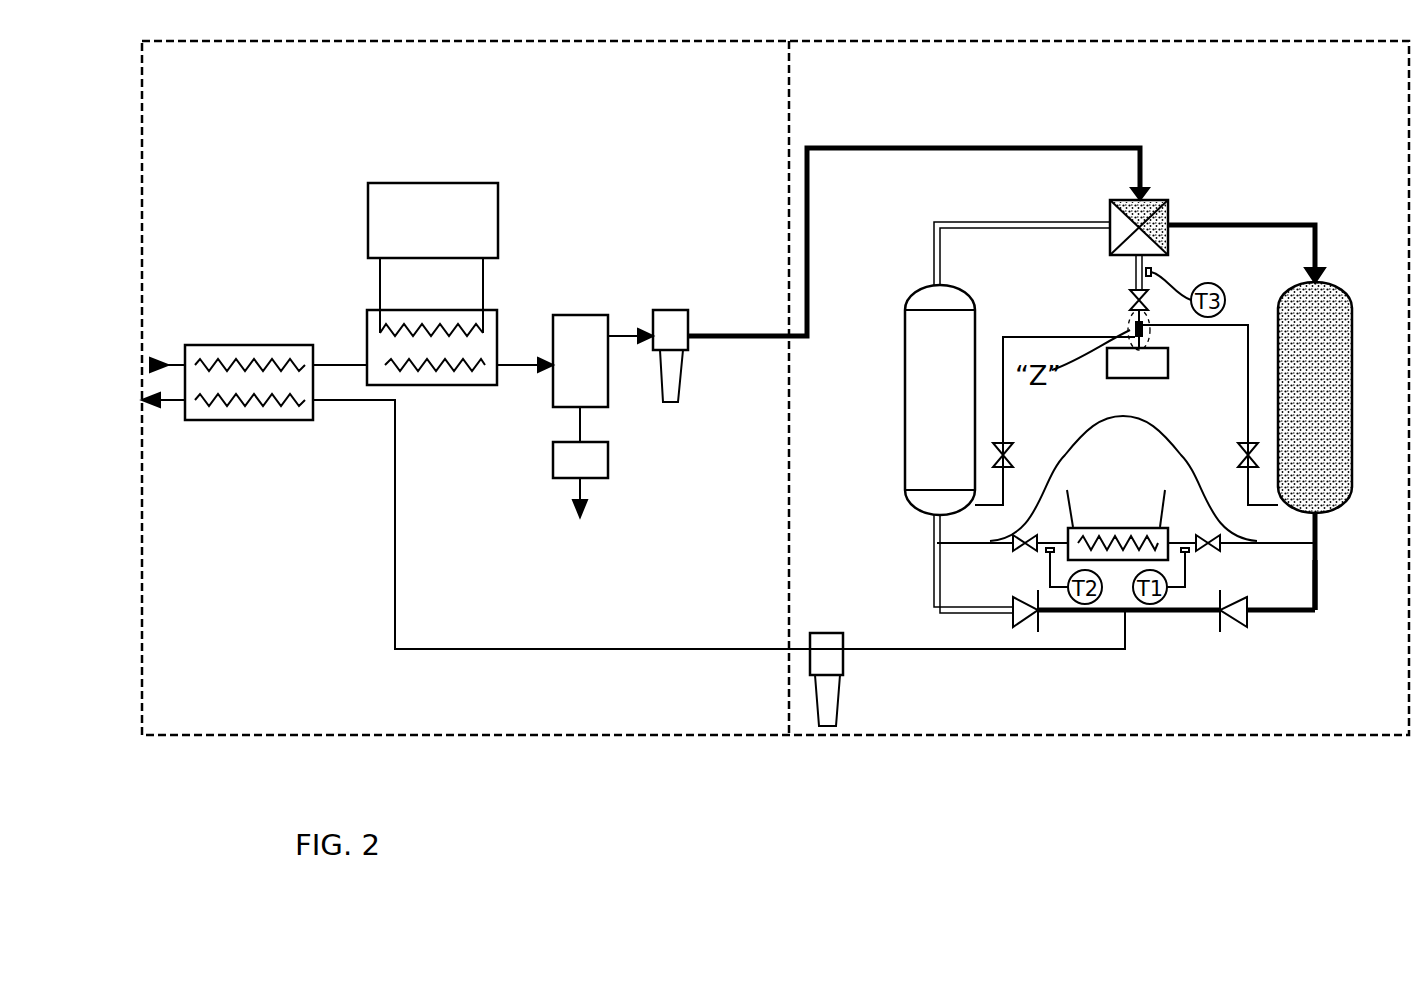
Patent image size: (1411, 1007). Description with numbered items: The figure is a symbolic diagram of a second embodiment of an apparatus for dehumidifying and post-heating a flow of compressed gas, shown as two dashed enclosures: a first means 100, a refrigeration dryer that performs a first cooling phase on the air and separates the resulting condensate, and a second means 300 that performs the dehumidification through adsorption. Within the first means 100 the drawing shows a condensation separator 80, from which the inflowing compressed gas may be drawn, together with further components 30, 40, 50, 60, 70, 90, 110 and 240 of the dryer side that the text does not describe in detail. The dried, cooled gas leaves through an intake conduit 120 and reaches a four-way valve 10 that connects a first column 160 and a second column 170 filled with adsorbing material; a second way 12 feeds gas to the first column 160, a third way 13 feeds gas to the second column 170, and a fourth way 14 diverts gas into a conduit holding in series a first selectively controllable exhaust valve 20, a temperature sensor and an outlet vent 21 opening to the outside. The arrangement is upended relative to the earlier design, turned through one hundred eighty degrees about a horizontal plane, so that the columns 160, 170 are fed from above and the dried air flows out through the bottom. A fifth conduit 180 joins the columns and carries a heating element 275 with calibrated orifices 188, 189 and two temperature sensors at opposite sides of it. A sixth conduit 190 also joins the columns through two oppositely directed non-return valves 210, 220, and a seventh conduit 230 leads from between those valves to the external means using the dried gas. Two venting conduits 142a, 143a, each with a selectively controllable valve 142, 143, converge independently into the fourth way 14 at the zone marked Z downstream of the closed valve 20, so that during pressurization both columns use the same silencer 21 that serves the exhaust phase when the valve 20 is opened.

The four-way valve 10 is at (212, 345).
The second way 12 is at (1250, 212).
The third way 13 is at (1148, 190).
The fourth way 14 is at (1122, 270).
The first selectively controllable exhaust valve 20 is at (220, 400).
The outlet vent 21 is at (1168, 365).
The heat exchanger coil 30 is at (272, 360).
The evaporator 40 is at (497, 385).
The evaporator coil 50 is at (425, 375).
The condenser coil 60 is at (490, 320).
The compressor 70 is at (498, 205).
The condensation separator 80 is at (590, 395).
The drain unit 90 is at (608, 455).
The first means 100 is at (185, 737).
The pump 110 is at (672, 310).
The intake conduit 120 is at (1017, 140).
The selectively controllable valve 142 is at (1013, 455).
The exhaust conduit 142a is at (1001, 383).
The selectively controllable valve 143 is at (1238, 455).
The exhaust conduit 143a is at (1227, 325).
The first column 160 is at (1350, 400).
The second column 170 is at (905, 400).
The fifth conduit 180 is at (1123, 471).
The calibrated orifice 188 is at (1210, 552).
The calibrated orifice 189 is at (1025, 552).
The sixth conduit 190 is at (1318, 598).
The non-return valve 210 is at (1232, 620).
The non-return valve 220 is at (1030, 613).
The seventh conduit 230 is at (1070, 651).
The pump 240 is at (843, 668).
The heating element 275 is at (1106, 515).
The second means 300 is at (917, 738).